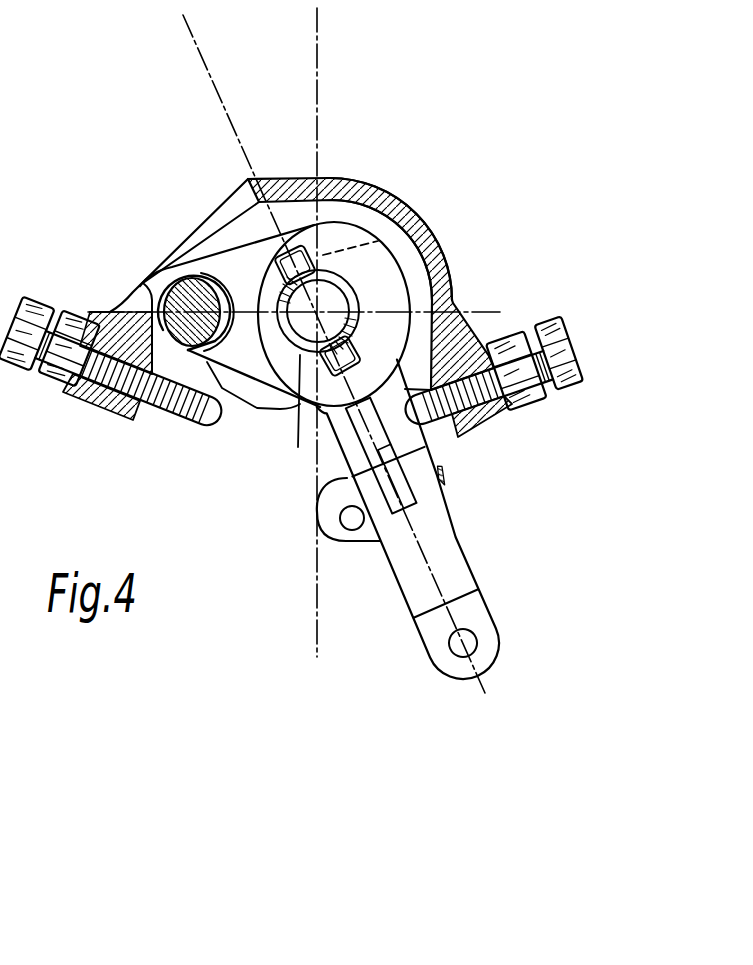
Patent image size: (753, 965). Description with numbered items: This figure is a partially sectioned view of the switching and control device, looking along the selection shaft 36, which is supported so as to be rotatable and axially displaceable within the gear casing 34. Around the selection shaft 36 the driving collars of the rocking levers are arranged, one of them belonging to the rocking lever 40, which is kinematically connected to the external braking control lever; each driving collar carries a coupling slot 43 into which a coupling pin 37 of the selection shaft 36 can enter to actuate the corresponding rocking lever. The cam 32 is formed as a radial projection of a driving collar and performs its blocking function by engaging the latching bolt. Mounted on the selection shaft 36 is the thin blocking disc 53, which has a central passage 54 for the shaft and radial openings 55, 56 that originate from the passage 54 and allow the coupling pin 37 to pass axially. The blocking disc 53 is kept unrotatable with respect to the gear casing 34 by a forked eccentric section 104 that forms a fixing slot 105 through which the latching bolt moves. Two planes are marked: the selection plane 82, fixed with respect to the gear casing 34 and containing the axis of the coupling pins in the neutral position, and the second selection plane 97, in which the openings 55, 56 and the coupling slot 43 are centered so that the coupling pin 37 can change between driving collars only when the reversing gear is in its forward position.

The cam 32 is at (250, 416).
The gear casing 34 is at (453, 264).
The selection shaft 36 is at (294, 415).
The coupling pin 37 is at (302, 236).
The rocking lever 40 is at (461, 540).
The coupling slot 43 is at (431, 206).
The blocking disc 53 is at (363, 224).
The passage 54 is at (340, 295).
The radial opening 55 is at (290, 275).
The radial opening 56 is at (356, 350).
The selection plane 82 is at (323, 40).
The second selection plane 97 is at (193, 43).
The forked eccentric section 104 is at (163, 421).
The fixing slot 105 is at (223, 250).